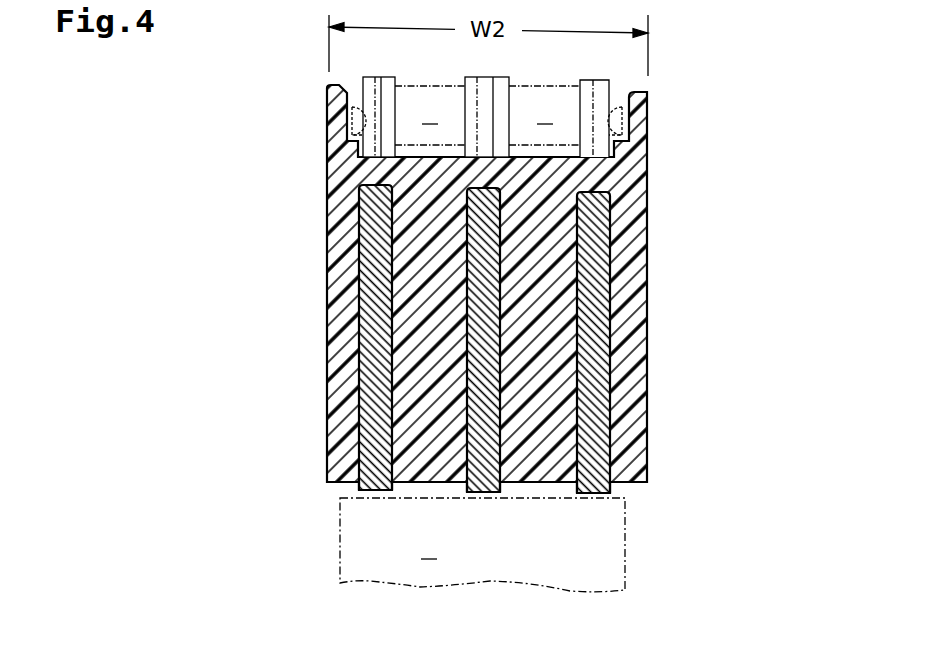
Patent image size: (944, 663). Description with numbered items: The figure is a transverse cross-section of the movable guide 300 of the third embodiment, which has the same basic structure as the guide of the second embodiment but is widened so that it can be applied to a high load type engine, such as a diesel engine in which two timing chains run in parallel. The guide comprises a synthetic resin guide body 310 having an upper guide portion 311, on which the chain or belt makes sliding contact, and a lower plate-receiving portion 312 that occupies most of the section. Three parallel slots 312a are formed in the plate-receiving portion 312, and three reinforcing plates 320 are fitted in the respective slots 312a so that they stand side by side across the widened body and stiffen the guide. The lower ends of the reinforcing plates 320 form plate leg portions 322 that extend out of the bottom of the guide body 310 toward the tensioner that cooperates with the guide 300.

The movable guide 300 is at (509, 327).
The guide body 310 is at (570, 279).
The guide portion 311 is at (550, 154).
The plate-receiving portion 312 is at (627, 233).
The slots 312a is at (383, 296).
The reinforcing plates 320 is at (368, 377).
The plate leg portions 322 is at (372, 493).